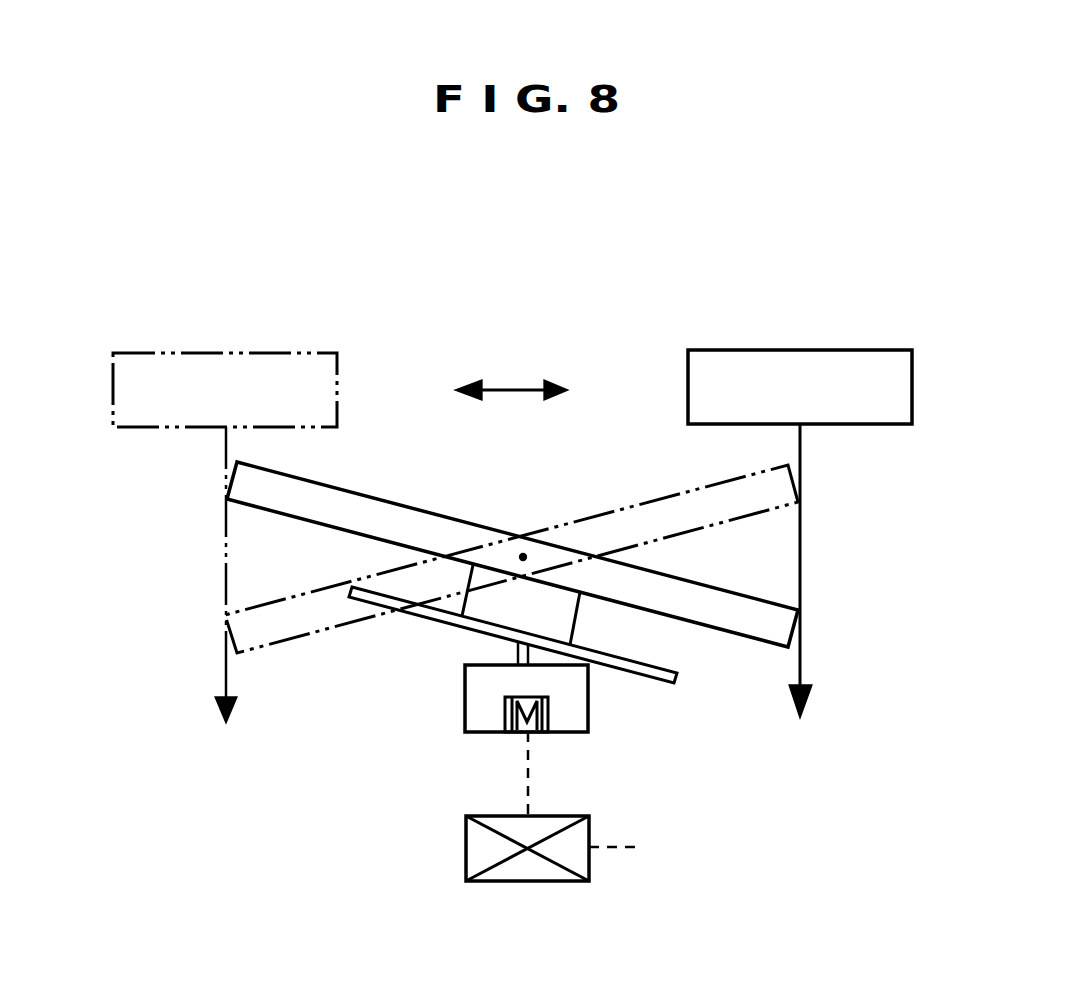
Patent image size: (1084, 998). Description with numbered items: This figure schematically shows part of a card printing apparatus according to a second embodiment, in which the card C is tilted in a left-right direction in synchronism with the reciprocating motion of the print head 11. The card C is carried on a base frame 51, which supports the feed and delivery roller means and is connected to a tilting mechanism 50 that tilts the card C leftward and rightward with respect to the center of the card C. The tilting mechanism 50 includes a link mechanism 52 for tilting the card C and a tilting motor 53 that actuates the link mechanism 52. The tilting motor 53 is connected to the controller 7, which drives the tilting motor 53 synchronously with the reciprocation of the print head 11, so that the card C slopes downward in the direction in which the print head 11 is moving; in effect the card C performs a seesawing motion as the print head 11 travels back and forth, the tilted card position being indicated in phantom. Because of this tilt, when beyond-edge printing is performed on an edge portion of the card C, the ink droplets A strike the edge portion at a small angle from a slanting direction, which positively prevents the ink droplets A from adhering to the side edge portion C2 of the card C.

The print head 11 is at (863, 350).
The ink droplets A is at (802, 675).
The card C is at (397, 503).
The side edge portion C2 is at (797, 623).
The tilting mechanism 50 is at (378, 872).
The base frame 51 is at (648, 672).
The link mechanism 52 is at (467, 688).
The tilting motor 53 is at (548, 717).
The controller 7 is at (528, 882).